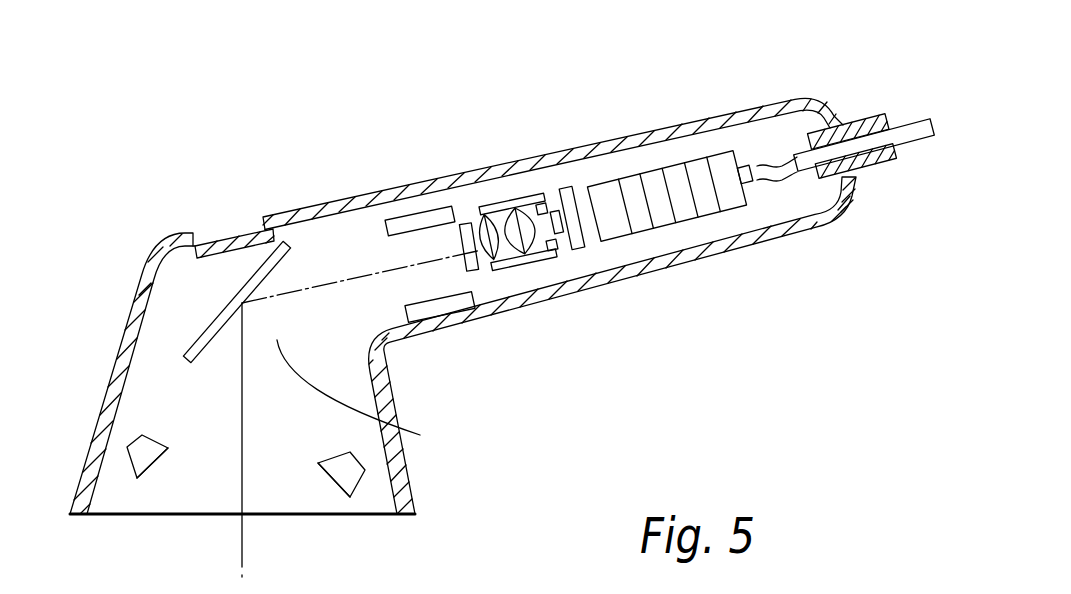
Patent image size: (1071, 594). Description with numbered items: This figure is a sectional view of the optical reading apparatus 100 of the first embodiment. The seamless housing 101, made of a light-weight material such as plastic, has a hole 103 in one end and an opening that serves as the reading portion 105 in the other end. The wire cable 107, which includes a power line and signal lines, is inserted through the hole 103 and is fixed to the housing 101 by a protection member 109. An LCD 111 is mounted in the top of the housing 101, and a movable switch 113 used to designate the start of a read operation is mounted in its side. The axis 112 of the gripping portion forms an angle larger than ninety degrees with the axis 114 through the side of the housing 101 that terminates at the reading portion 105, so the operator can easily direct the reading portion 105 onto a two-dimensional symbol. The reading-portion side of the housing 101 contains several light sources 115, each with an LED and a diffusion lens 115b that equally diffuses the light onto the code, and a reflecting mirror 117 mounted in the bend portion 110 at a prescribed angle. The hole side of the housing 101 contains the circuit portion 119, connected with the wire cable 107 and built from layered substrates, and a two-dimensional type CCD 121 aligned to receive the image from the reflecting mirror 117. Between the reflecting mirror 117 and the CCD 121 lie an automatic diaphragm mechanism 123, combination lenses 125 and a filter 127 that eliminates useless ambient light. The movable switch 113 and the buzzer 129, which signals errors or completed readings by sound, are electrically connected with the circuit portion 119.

The optical reading apparatus 100 is at (680, 93).
The housing 101 is at (326, 203).
The hole 103 is at (840, 123).
The opening (reading portion) 105 is at (383, 515).
The wire cable 107 is at (917, 137).
The protection member 109 is at (870, 168).
The bend portion 110 is at (367, 395).
The LCD 111 is at (223, 240).
The axis of gripping portion 112 is at (338, 283).
The movable switch 113 is at (410, 222).
The axis 114 is at (238, 366).
The light source 115 is at (130, 460).
The diffusion lens 115b is at (152, 461).
The reflecting mirror 117 is at (212, 320).
The circuit portion 119 is at (703, 222).
The two-dimensional type CCD 121 is at (583, 252).
The automatic diaphragm mechanism 123 is at (552, 250).
The combination lenses 125 is at (505, 266).
The filter 127 is at (467, 220).
The buzzer 129 is at (445, 310).